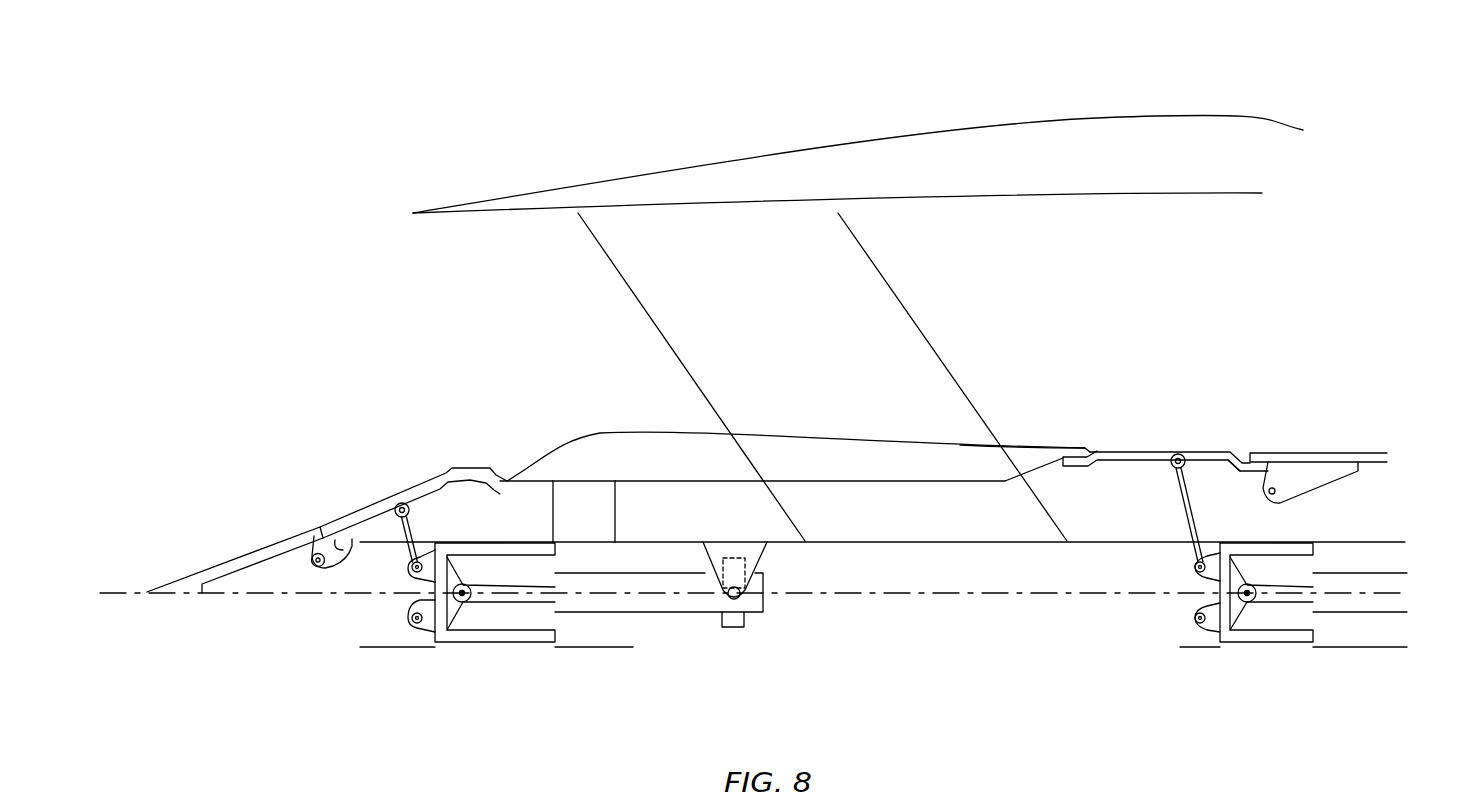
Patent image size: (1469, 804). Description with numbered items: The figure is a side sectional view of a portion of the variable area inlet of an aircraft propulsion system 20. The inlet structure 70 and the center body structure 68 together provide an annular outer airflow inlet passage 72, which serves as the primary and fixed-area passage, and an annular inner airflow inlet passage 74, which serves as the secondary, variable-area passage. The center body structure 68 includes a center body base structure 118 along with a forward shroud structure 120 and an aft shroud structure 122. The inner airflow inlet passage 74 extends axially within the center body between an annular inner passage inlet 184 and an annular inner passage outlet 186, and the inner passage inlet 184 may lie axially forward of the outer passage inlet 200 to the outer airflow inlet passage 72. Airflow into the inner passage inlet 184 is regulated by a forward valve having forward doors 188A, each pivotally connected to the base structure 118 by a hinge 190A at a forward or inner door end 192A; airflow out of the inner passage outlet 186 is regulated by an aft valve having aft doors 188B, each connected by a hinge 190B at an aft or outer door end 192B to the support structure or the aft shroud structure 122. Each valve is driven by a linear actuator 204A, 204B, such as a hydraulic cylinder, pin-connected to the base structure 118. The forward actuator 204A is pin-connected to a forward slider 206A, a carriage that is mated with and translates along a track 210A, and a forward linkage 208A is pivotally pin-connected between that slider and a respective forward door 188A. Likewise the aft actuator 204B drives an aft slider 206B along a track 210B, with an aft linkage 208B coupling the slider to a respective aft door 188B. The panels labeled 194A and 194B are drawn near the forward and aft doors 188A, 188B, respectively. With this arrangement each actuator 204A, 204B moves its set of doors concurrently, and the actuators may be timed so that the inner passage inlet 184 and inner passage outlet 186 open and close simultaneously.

The aircraft propulsion system 20 is at (384, 140).
The inlet structure 70 is at (893, 128).
The outer passage inlet 200 is at (406, 271).
The outer airflow inlet passage 72 is at (583, 332).
The inner airflow inlet passage 74 is at (683, 527).
The forward shroud structure 120 is at (546, 434).
The center body structure 68 is at (1036, 422).
The inner passage inlet 184 is at (452, 504).
The center body base structure 118 is at (826, 540).
The inner passage outlet 186 is at (1123, 462).
The forward door end 192A is at (330, 526).
The forward hinged panel 194A is at (452, 476).
The forward door hinge 190A is at (312, 568).
The forward door 188A is at (399, 500).
The forward linkage 208A is at (403, 535).
The forward slider 206A is at (433, 600).
The forward track 210A is at (520, 557).
The forward actuator 204A is at (667, 613).
The aft hinged panel 194B is at (1096, 450).
The aft door 188B is at (1180, 452).
The aft door end 192B is at (1240, 451).
The aft shroud structure 122 is at (1340, 442).
The aft door hinge 190B is at (1282, 514).
The aft linkage 208B is at (1186, 512).
The aft slider 206B is at (1220, 595).
The aft track 210B is at (1282, 567).
The aft actuator 204B is at (1365, 613).